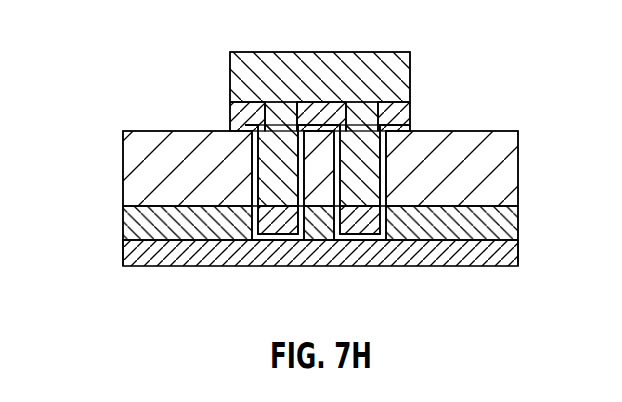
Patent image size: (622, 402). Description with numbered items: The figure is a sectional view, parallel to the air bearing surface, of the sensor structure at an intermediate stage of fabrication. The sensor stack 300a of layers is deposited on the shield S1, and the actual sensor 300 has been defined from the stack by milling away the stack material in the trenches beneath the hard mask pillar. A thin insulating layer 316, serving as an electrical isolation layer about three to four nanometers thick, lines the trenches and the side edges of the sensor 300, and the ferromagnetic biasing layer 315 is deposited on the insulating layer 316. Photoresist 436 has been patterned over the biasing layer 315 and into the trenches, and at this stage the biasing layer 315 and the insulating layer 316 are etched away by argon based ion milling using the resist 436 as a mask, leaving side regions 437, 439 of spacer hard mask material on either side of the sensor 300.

The photoresist 436 is at (400, 50).
The ferromagnetic biasing layer 315 is at (409, 107).
The insulating layer 316 is at (413, 128).
The side region of spacer material 439 is at (130, 163).
The side region of spacer material 437 is at (500, 173).
The sensor 300 is at (320, 242).
The sensor stack 300a is at (527, 205).
The shield S1 is at (515, 266).